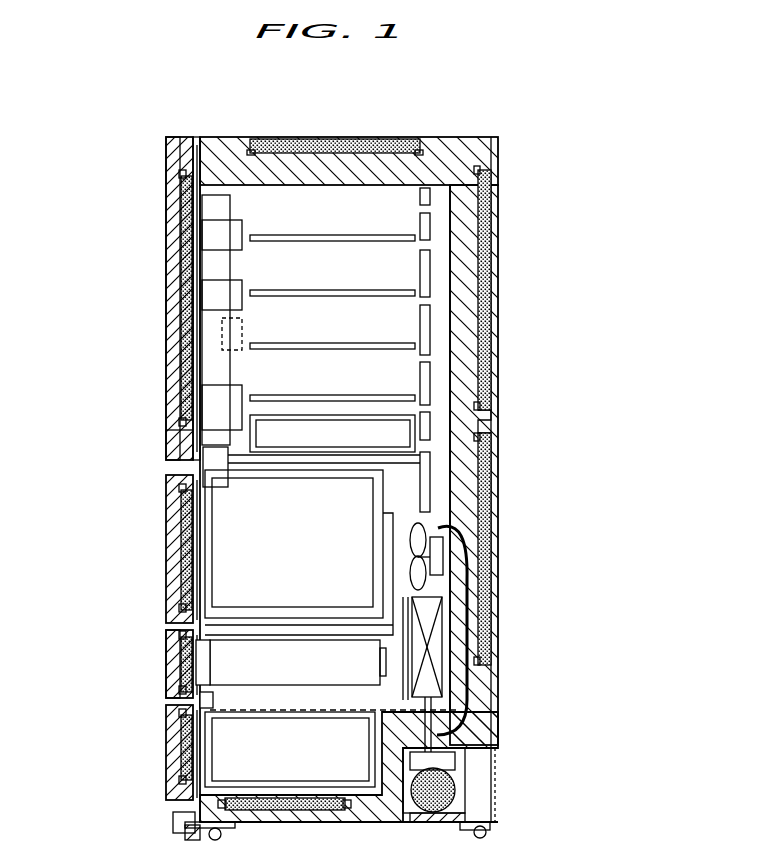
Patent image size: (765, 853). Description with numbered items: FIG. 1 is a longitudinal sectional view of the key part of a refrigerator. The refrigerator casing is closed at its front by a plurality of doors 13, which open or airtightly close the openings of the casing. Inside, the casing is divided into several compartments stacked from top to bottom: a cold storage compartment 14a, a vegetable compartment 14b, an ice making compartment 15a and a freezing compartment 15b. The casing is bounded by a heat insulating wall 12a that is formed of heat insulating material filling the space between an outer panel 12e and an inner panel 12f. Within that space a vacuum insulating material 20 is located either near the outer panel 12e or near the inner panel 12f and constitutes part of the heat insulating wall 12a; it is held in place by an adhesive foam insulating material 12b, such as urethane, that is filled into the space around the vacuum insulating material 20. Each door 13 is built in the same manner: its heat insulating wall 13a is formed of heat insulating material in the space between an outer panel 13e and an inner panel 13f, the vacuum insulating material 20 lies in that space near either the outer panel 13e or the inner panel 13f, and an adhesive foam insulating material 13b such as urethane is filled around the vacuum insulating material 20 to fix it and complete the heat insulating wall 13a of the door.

The heat insulating wall 12a is at (372, 137).
The foam insulating material 12b is at (497, 210).
The outer panel 12e is at (497, 358).
The inner panel 12f is at (497, 312).
The door 13 is at (166, 160).
The heat insulating wall 13a is at (166, 240).
The foam insulating material 13b is at (166, 302).
The outer panel 13e is at (166, 431).
The inner panel 13f is at (208, 466).
The cold storage compartment 14a is at (338, 279).
The vegetable compartment 14b is at (311, 562).
The ice making compartment 15a is at (311, 669).
The freezing compartment 15b is at (311, 757).
The vacuum insulating material 20 is at (288, 137).